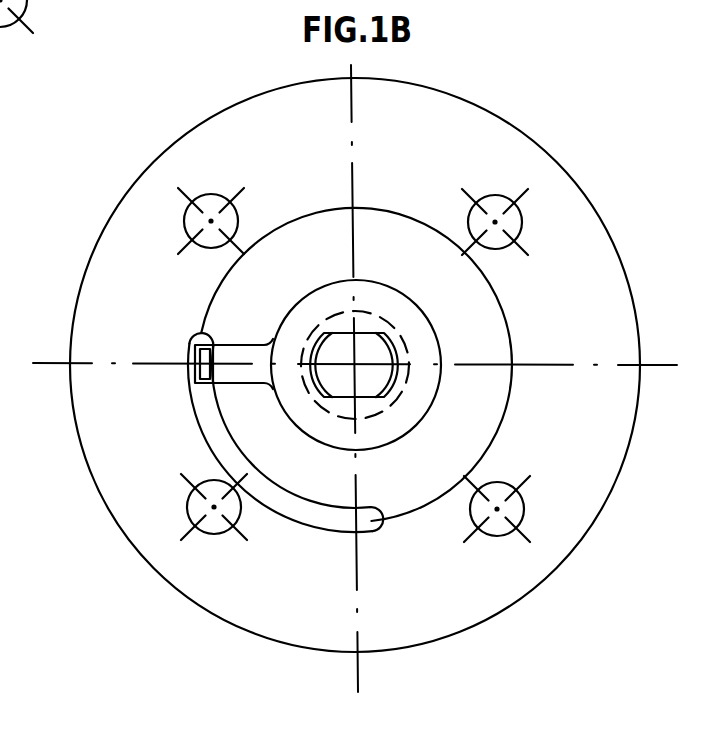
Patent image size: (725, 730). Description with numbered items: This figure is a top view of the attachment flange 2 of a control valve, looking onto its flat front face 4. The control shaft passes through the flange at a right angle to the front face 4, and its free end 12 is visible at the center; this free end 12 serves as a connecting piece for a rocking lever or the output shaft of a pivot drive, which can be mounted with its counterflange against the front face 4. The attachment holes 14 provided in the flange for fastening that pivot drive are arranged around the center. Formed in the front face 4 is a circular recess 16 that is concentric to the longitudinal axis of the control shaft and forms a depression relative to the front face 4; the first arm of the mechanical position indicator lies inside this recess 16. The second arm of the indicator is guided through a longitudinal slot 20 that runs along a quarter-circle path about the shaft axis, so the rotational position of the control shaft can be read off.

The attachment flange 2 is at (628, 280).
The front face 4 is at (620, 412).
The free end 12 is at (373, 350).
The mounting bolt holes 14 is at (517, 223).
The recess 16 is at (382, 231).
The longitudinal slot 20 is at (208, 434).